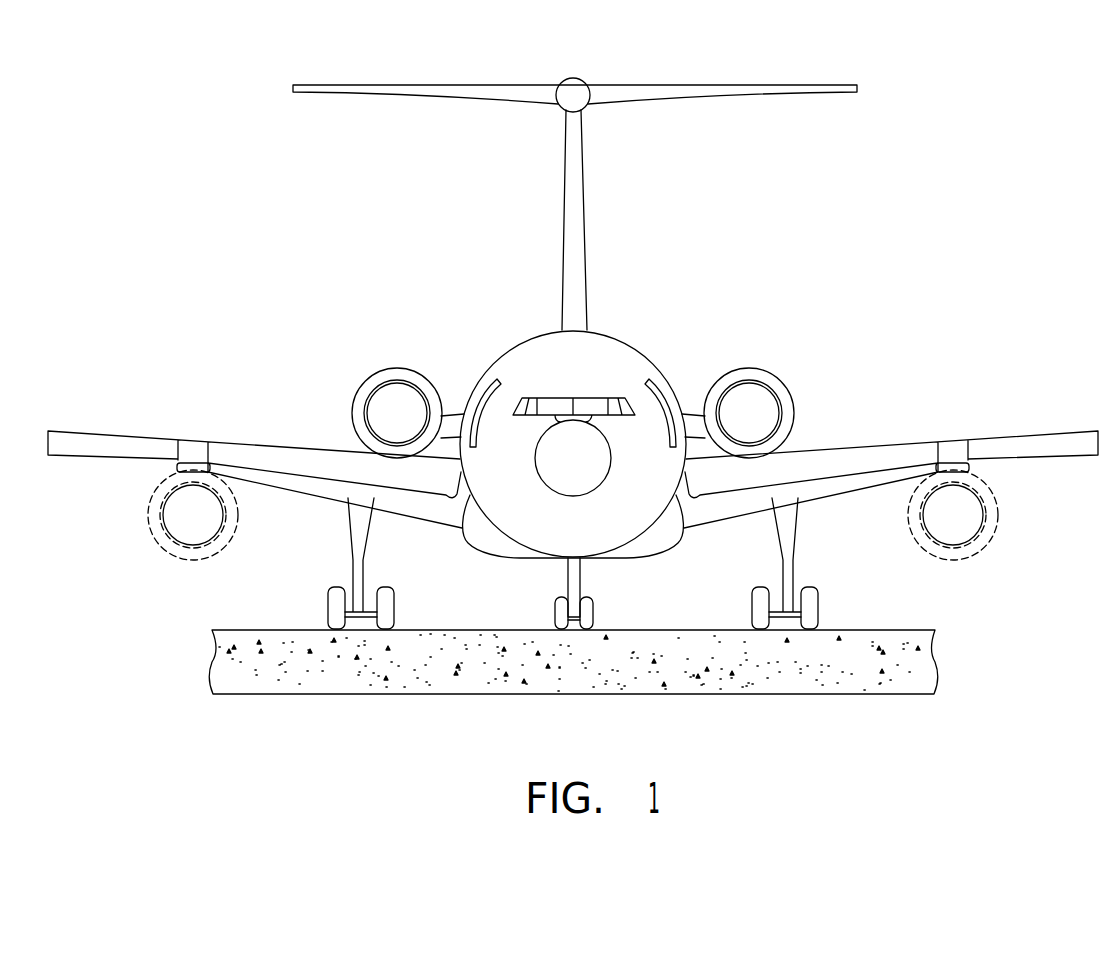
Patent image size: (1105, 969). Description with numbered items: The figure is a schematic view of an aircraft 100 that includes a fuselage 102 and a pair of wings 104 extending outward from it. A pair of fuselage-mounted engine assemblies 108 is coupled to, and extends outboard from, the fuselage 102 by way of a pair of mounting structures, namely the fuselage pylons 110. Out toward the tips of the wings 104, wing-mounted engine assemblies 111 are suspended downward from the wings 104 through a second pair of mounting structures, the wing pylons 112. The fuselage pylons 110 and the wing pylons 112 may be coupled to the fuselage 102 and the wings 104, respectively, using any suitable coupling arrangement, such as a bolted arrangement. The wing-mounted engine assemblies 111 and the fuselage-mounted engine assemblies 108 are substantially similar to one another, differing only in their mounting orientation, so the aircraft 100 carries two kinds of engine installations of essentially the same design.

The aircraft 100 is at (172, 110).
The fuselage 102 is at (602, 537).
The wings 104 is at (125, 436).
The fuselage-mounted engine assemblies 108 is at (363, 388).
The fuselage pylons 110 is at (452, 414).
The wing-mounted engine assemblies 111 is at (158, 522).
The wing pylons 112 is at (173, 467).